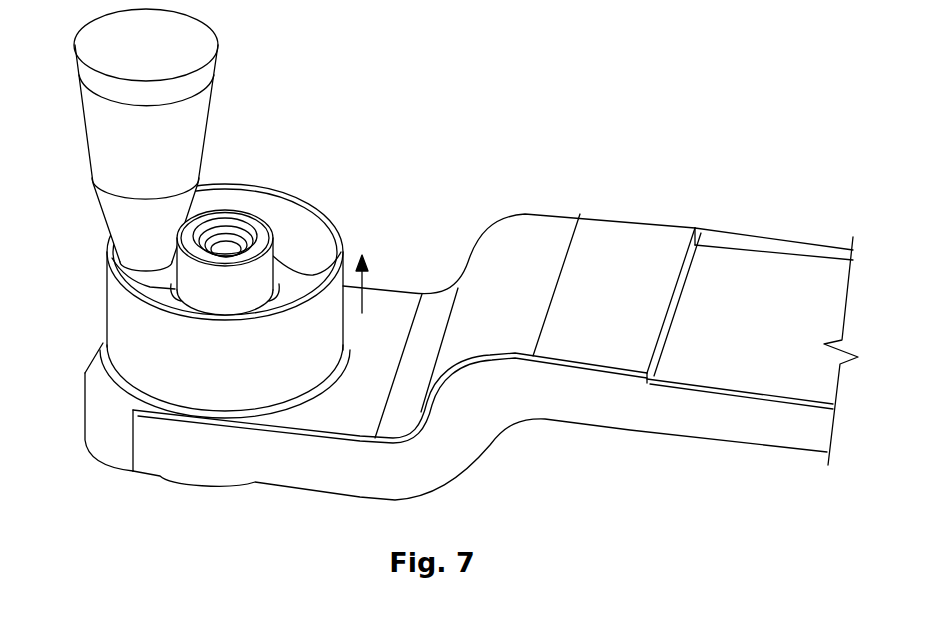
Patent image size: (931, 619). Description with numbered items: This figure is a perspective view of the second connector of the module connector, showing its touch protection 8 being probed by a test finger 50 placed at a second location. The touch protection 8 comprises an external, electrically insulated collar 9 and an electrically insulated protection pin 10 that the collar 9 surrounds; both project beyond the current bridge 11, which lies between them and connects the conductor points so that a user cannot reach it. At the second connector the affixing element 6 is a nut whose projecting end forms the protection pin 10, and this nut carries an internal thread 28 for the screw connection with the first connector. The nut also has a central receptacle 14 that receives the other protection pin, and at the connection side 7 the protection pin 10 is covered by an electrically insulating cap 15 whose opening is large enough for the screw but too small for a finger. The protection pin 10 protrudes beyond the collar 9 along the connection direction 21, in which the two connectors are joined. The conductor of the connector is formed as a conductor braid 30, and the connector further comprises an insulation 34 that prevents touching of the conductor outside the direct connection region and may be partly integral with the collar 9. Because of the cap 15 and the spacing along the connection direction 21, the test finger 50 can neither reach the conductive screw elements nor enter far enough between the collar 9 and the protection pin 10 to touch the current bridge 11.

The affixing element 6 is at (206, 213).
The connection side 7 is at (360, 233).
The touch protection 8 is at (92, 259).
The collar 9 is at (342, 242).
The protection pin 10 is at (285, 213).
The current bridge 11 is at (293, 273).
The central receptacle 14 is at (228, 211).
The cap 15 is at (212, 300).
The connection direction 21 is at (373, 289).
The internal thread 28 is at (247, 233).
The conductor braid 30 is at (724, 331).
The insulation 34 is at (598, 215).
The test finger 50 is at (212, 64).